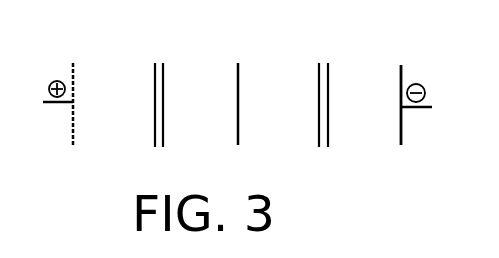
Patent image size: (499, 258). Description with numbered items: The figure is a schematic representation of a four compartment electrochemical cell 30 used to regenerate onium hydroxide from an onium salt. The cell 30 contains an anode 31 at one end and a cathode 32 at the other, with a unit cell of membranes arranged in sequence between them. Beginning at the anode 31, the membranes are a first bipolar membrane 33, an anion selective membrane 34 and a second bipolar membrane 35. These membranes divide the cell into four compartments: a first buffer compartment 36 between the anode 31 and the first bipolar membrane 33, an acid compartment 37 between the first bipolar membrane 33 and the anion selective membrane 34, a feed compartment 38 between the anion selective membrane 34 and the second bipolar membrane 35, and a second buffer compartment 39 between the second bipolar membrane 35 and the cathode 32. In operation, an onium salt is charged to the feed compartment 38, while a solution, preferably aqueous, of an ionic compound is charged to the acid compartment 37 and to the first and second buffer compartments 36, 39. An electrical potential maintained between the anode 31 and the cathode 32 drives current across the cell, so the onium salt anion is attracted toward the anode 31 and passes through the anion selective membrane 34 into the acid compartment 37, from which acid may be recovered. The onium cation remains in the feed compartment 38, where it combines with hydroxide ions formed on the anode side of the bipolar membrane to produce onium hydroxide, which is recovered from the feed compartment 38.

The electrochemical cell 30 is at (437, 67).
The anode 31 is at (61, 90).
The cathode 32 is at (410, 92).
The first bipolar membrane 33 is at (159, 104).
The anion selective membrane 34 is at (238, 104).
The second bipolar membrane 35 is at (323, 104).
The first buffer compartment 36 is at (116, 107).
The acid compartment 37 is at (198, 107).
The feed compartment 38 is at (277, 107).
The second buffer compartment 39 is at (363, 109).